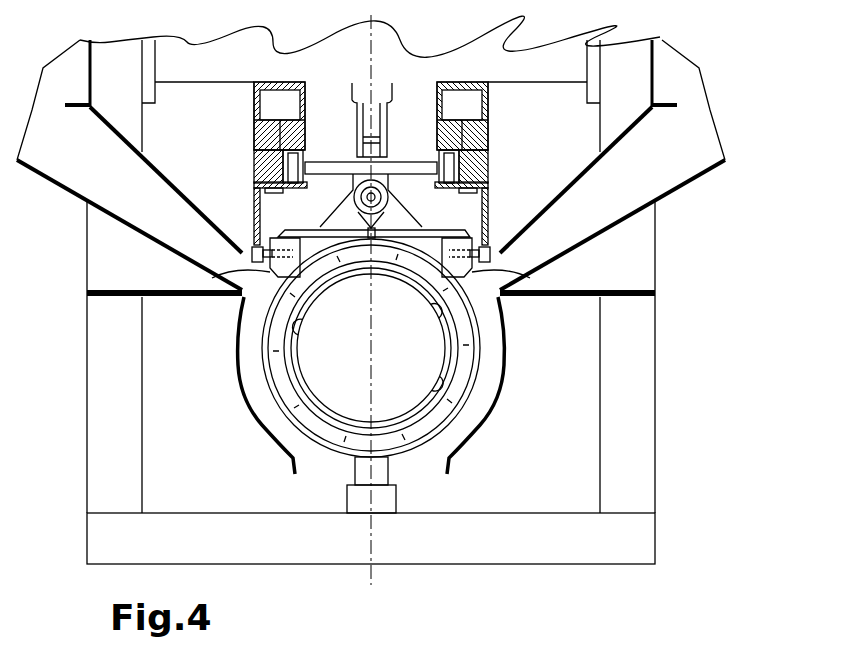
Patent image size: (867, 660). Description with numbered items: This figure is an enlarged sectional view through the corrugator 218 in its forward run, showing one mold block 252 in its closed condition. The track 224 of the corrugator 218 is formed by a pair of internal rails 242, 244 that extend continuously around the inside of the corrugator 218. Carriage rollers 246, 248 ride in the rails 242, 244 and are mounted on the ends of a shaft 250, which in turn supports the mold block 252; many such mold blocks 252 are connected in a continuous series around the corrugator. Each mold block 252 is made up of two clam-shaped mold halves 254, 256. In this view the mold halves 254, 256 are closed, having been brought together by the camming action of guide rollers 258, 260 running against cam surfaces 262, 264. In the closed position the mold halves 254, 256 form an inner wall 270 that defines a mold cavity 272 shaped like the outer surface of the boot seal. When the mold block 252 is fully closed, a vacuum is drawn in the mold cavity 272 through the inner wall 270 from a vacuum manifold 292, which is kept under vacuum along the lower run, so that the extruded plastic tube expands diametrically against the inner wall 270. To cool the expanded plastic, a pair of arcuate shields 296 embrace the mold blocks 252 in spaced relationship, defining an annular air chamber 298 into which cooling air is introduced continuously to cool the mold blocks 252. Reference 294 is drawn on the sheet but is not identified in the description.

The track 224 is at (240, 118).
The internal rail 242 is at (255, 162).
The internal rail 244 is at (487, 157).
The carriage roller 246 is at (305, 158).
The carriage roller 248 is at (442, 167).
The shaft 250 is at (403, 165).
The mold block 252 is at (278, 386).
The mold half 254 is at (300, 333).
The mold half 256 is at (440, 384).
The guide roller 258 is at (243, 279).
The guide roller 260 is at (505, 275).
The cam surface 262 is at (255, 213).
The cam surface 264 is at (487, 213).
The inner wall 270 is at (460, 323).
The mold cavity 272 is at (354, 387).
The vacuum manifold 292 is at (358, 500).
The right arm 294 is at (637, 170).
The arcuate shield 296 is at (465, 442).
The annular air chamber 298 is at (478, 412).
The corrugator 218 is at (260, 458).